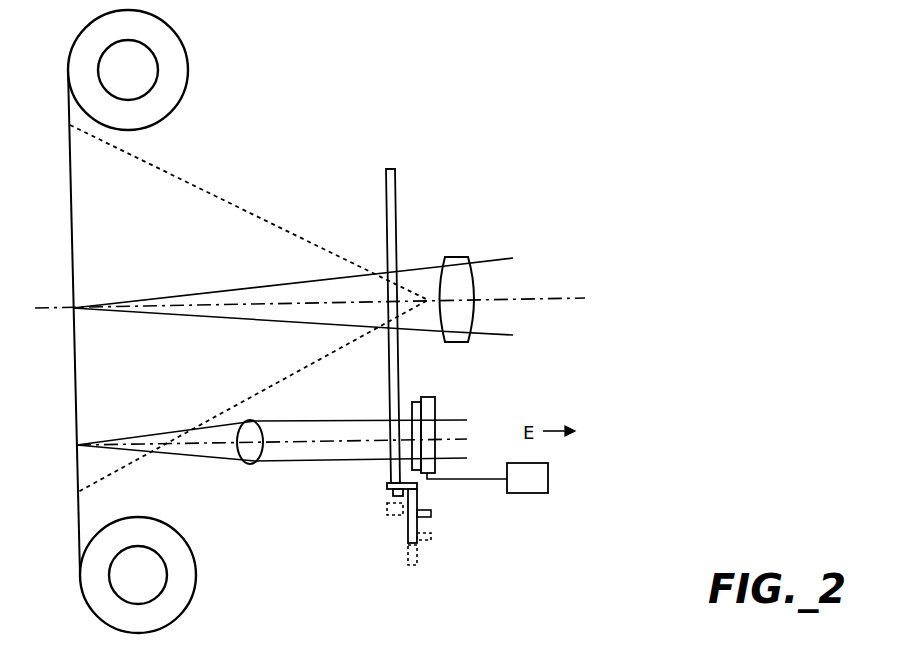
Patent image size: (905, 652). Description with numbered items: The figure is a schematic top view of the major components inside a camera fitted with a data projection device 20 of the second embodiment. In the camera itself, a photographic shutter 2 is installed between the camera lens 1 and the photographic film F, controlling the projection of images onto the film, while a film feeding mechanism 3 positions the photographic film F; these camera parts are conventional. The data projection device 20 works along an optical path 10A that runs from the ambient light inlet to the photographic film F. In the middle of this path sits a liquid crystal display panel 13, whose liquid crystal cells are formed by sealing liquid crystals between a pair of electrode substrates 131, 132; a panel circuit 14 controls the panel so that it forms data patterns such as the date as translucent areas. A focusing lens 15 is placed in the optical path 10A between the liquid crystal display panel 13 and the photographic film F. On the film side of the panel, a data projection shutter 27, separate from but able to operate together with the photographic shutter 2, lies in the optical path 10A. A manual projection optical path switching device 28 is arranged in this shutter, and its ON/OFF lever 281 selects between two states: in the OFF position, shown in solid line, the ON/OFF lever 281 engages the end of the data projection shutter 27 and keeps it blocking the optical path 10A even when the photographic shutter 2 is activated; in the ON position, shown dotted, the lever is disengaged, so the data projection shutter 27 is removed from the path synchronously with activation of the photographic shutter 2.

The camera lens 1 is at (462, 257).
The photographic shutter 2 is at (392, 169).
The film feeding mechanism 3 is at (185, 52).
The photographic film F is at (71, 196).
The optical path 10A is at (522, 367).
The liquid crystal display panel 13 is at (510, 483).
The electrode substrate 131 is at (415, 470).
The electrode substrate 132 is at (428, 485).
The panel circuit 14 is at (540, 488).
The focusing lens 15 is at (250, 464).
The data projection device 20 is at (628, 452).
The data projection shutter 27 is at (391, 467).
The projection optical path switching device 28 is at (395, 540).
The ON/OFF lever 281 is at (378, 528).